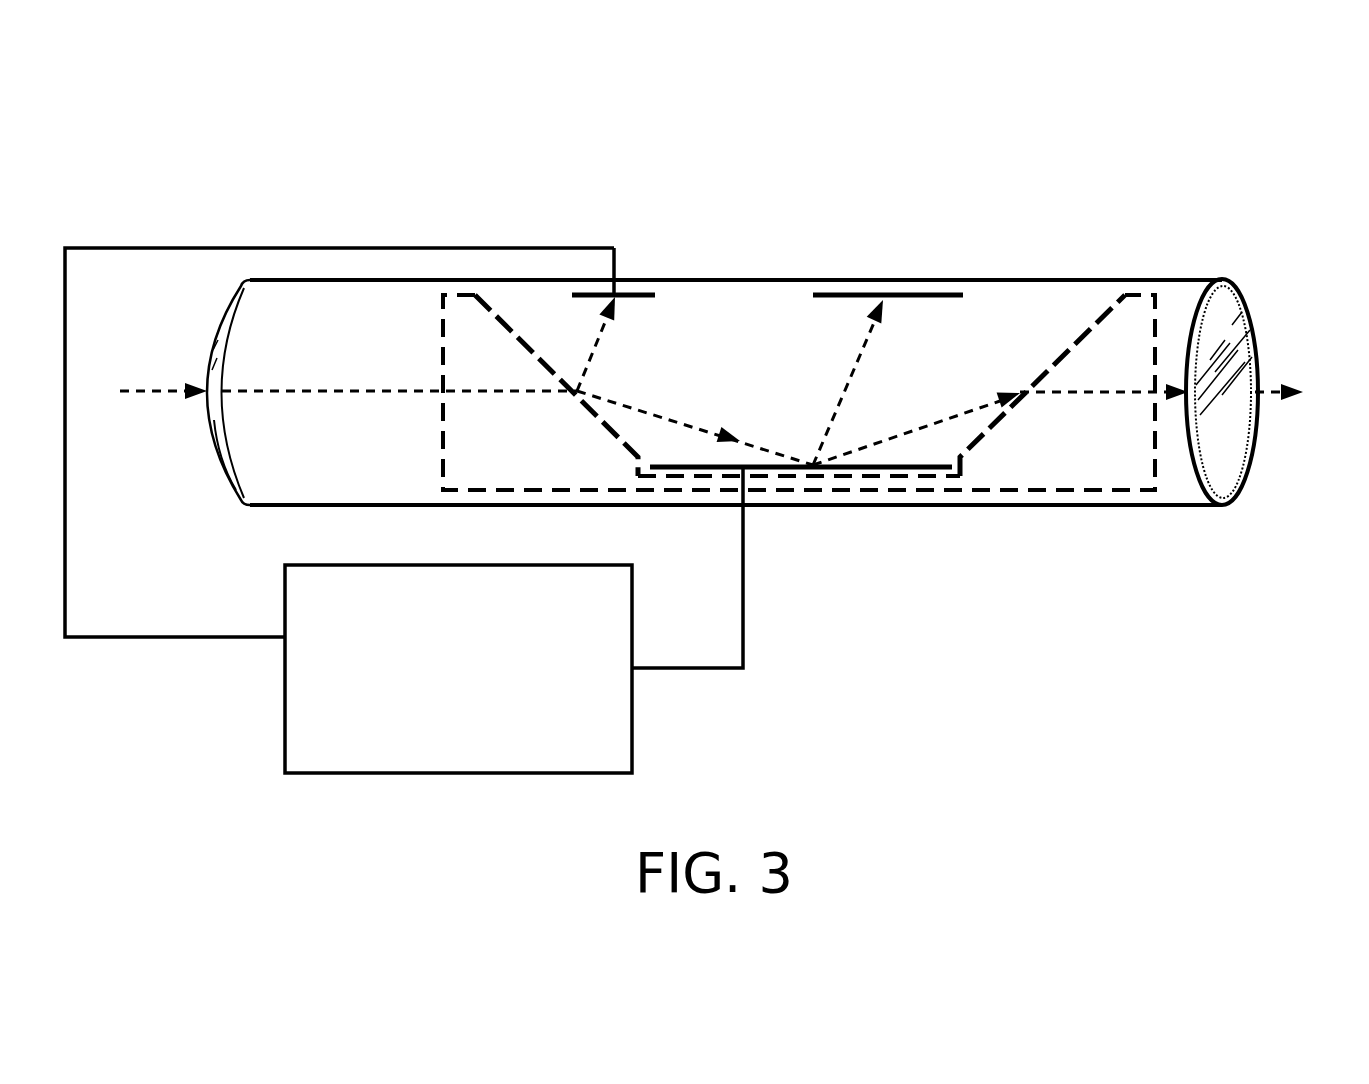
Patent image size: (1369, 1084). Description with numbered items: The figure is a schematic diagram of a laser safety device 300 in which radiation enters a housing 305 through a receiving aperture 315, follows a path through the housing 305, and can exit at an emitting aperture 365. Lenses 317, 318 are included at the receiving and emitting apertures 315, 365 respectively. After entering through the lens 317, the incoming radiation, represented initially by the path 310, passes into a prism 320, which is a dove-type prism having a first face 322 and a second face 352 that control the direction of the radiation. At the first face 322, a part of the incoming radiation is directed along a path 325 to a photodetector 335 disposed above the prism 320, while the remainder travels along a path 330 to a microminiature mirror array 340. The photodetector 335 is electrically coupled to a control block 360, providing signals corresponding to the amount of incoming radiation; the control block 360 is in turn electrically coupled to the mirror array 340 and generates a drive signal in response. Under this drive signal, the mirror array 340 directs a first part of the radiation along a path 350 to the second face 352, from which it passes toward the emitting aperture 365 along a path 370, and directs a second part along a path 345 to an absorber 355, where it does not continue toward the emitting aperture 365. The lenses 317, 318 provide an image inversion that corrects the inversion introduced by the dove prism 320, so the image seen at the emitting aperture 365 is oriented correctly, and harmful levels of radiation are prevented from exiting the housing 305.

The laser safety device 300 is at (1225, 148).
The housing 305 is at (1138, 278).
The incoming radiation path 310 is at (134, 390).
The receiving aperture 315 is at (218, 318).
The lens 317 is at (210, 432).
The lens 318 is at (1237, 330).
The prism 320 is at (463, 296).
The first face 322 is at (508, 327).
The path 325 is at (600, 340).
The path 330 is at (760, 450).
The photodetector 335 is at (641, 294).
The microminiature mirror array 340 is at (862, 470).
The path 345 is at (868, 360).
The path 350 is at (967, 413).
The second face 352 is at (1040, 372).
The absorber 355 is at (860, 294).
The control block 360 is at (310, 723).
The emitting aperture 365 is at (1205, 302).
The path 370 is at (1260, 395).